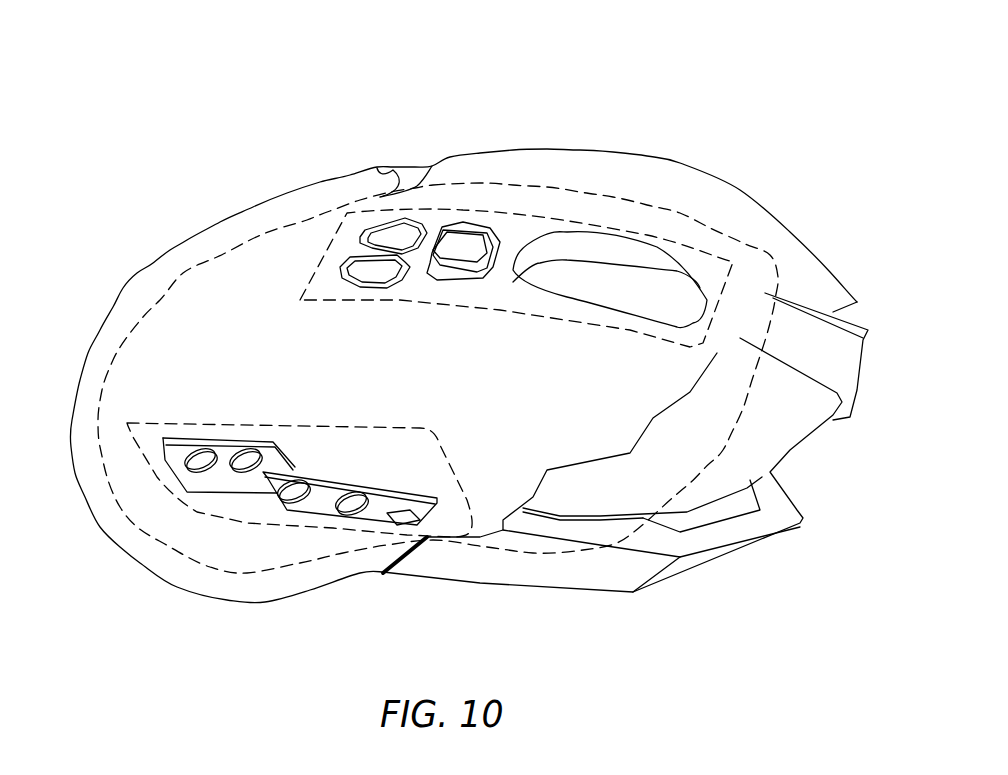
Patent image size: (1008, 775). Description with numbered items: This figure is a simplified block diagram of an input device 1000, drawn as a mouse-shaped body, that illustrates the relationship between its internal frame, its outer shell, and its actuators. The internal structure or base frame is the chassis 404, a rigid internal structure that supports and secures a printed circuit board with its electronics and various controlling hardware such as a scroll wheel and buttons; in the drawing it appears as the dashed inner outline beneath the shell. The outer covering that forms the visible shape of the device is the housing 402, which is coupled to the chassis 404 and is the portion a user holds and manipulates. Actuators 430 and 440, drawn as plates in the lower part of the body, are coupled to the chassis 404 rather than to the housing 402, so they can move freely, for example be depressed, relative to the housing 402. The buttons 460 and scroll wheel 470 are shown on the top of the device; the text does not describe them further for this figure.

The input device 1000 is at (464, 335).
The housing 402 is at (220, 220).
The chassis 404 is at (160, 288).
The buttons 460 is at (460, 245).
The scroll wheel 470 is at (628, 252).
The actuator 430 is at (220, 482).
The actuator 440 is at (327, 503).